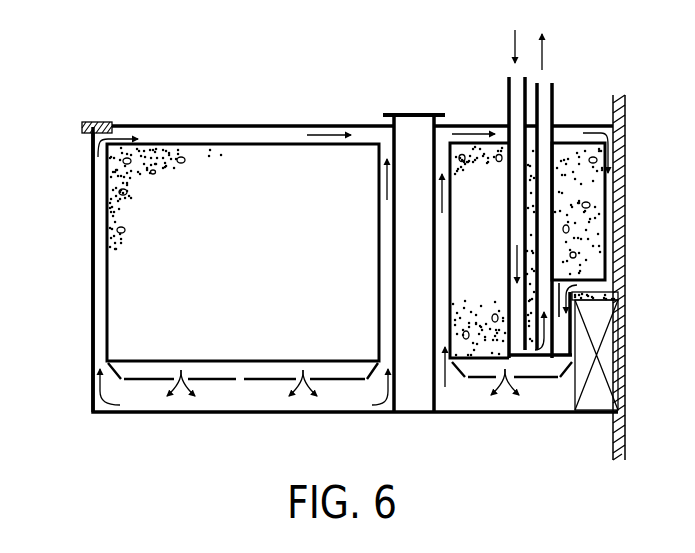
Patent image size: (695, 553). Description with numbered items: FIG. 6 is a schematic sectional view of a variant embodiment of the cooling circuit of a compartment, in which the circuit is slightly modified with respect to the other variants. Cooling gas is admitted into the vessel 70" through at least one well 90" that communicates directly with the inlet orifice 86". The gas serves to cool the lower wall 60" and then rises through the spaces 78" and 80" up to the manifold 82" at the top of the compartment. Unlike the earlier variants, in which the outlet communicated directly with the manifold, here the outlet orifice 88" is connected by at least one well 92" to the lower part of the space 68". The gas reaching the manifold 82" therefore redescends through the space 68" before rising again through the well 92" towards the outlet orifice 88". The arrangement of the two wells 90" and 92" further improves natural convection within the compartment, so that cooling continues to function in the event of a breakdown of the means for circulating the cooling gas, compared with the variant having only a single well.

The lower wall 60 is at (253, 415).
The space 68 is at (608, 203).
The vessel 70 is at (208, 368).
The space 78 is at (102, 250).
The space 80 is at (390, 240).
The manifold 82 is at (223, 137).
The inlet orifice 86 is at (512, 88).
The outlet orifice 88 is at (547, 98).
The well 90 is at (508, 220).
The well 92 is at (545, 293).